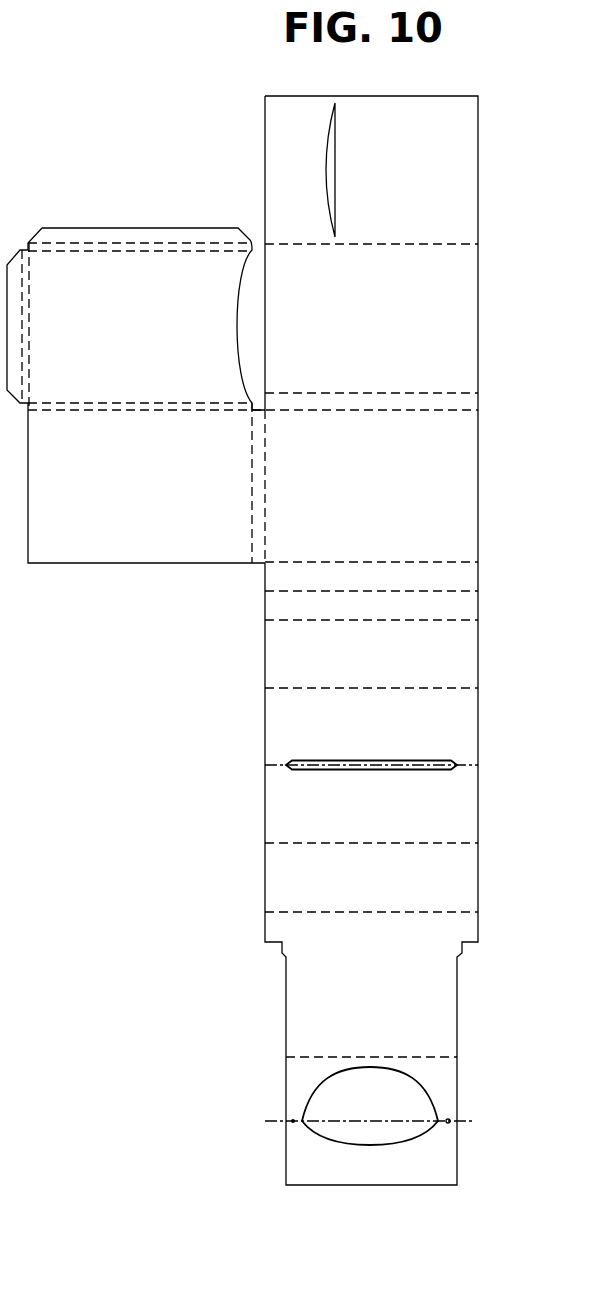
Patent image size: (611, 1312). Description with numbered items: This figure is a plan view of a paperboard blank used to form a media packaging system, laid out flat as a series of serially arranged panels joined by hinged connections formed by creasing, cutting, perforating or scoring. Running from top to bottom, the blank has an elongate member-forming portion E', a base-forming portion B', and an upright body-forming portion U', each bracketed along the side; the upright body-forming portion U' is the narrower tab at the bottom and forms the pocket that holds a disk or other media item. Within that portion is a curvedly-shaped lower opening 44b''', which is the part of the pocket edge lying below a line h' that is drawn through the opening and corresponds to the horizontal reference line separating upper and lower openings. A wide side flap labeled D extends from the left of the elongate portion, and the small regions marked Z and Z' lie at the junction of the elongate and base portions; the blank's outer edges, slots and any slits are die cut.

The lower opening 44b''' is at (372, 1149).
The panel D is at (252, 198).
The elongate member-forming portion E' is at (402, 343).
The glue flap Z' is at (410, 591).
The base-forming portion B' is at (335, 752).
The upright body-forming portion U' is at (326, 1048).
The fold line h' is at (384, 1121).
The glue flap Z is at (2, 590).